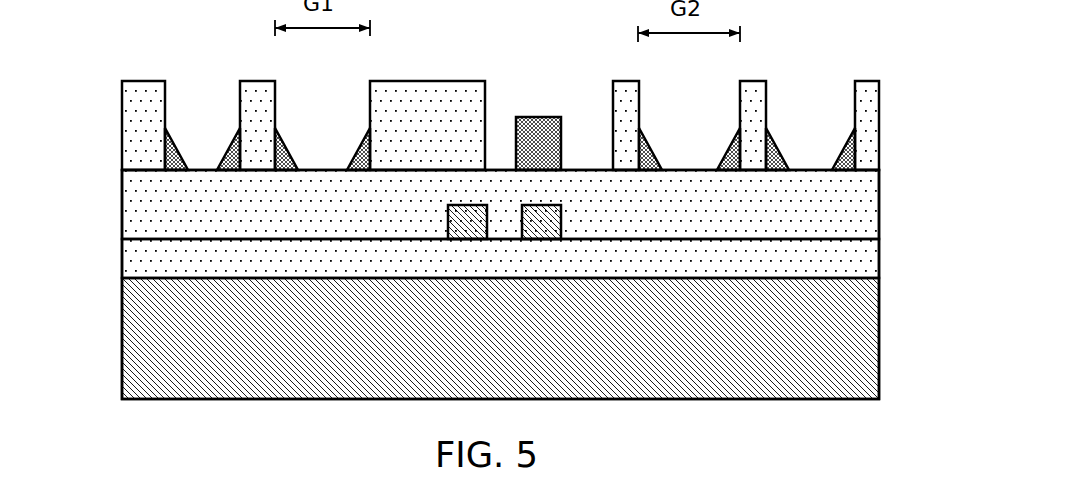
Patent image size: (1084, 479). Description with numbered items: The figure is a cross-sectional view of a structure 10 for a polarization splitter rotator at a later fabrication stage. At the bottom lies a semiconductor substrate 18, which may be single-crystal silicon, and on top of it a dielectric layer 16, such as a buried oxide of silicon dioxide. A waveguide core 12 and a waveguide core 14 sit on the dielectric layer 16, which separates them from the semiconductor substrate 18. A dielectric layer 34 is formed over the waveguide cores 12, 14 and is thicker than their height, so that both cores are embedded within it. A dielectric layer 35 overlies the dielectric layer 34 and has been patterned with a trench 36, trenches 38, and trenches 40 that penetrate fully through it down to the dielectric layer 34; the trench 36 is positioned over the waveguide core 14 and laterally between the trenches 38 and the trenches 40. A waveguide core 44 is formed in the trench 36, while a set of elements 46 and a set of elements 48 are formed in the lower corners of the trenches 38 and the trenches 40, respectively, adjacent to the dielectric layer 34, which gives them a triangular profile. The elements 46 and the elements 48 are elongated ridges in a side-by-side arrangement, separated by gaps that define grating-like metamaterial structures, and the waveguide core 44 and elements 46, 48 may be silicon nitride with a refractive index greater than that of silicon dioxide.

The structure 10 is at (124, 47).
The waveguide core 12 is at (463, 228).
The waveguide core 14 is at (550, 225).
The dielectric layer 16 is at (808, 262).
The semiconductor substrate 18 is at (808, 340).
The dielectric layer 34 is at (168, 193).
The dielectric layer 35 is at (147, 115).
The trench 36 is at (583, 103).
The trenches 38 is at (210, 143).
The trenches 40 is at (702, 143).
The waveguide core 44 is at (545, 135).
The elements 46 is at (177, 157).
The elements 48 is at (853, 156).